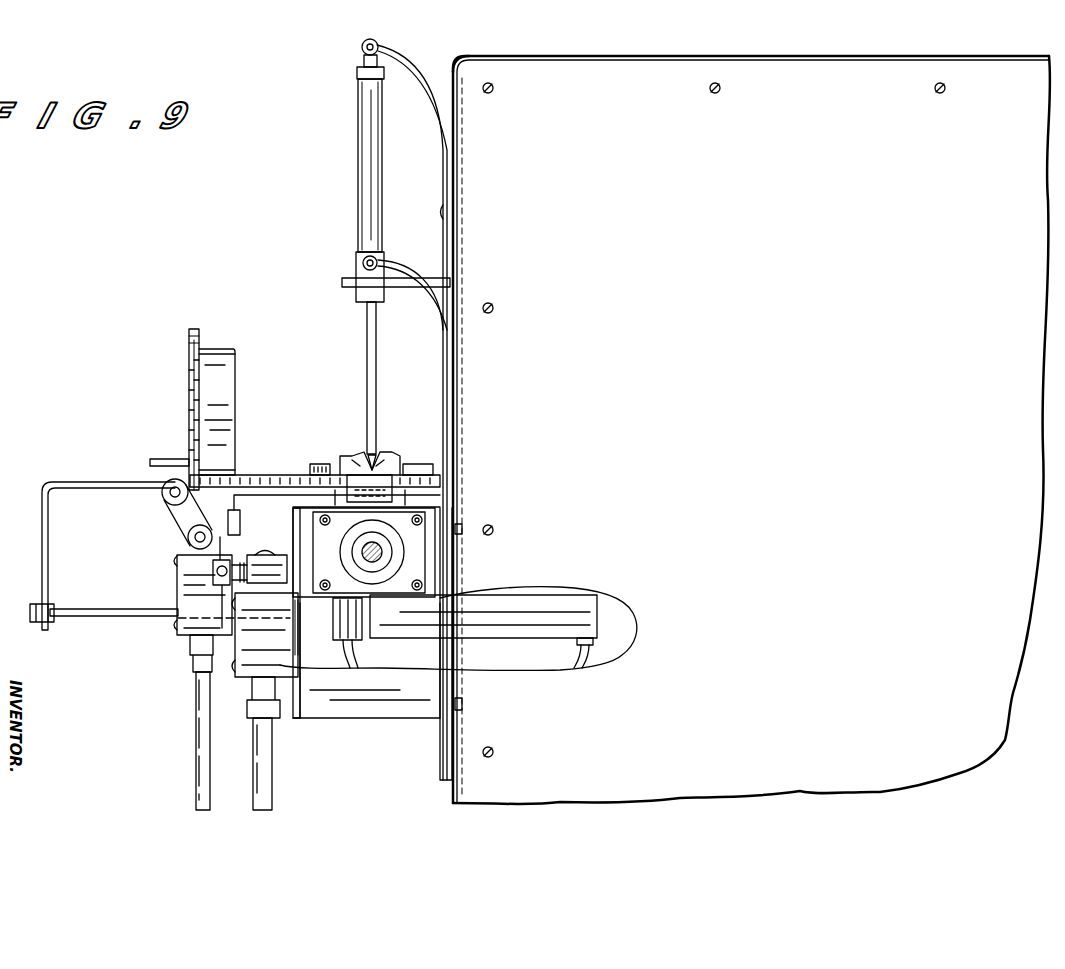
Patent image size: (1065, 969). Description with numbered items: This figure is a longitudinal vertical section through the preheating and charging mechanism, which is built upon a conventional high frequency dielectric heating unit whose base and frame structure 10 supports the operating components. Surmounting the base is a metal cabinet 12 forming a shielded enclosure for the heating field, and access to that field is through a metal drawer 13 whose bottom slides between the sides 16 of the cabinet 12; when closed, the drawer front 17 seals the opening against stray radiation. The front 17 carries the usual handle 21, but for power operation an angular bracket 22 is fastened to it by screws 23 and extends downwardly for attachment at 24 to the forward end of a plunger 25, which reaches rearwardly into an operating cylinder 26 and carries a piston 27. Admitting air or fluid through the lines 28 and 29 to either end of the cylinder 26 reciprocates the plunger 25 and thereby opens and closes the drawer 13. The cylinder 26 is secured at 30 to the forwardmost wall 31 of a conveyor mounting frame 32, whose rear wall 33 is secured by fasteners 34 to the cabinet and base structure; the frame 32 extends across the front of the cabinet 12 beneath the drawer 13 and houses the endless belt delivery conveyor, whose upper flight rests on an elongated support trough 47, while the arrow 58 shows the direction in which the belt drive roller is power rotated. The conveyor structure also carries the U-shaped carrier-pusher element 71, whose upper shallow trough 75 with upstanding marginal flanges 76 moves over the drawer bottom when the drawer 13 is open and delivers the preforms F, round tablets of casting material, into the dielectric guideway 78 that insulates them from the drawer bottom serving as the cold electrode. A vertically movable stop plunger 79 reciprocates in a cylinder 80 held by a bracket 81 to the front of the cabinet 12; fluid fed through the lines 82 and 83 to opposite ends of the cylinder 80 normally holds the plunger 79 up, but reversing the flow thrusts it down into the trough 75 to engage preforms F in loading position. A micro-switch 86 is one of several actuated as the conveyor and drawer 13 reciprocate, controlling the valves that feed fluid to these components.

The base and frame structure 10 is at (446, 800).
The cabinet 12 is at (497, 47).
The drawer 13 is at (186, 396).
The sides of the cabinet 16 is at (751, 415).
The front of the drawer 17 is at (189, 371).
The handle 21 is at (158, 466).
The angular bracket 22 is at (48, 482).
The screws 23 is at (152, 471).
The attachment 24 is at (30, 606).
The plunger 25 is at (92, 618).
The operating cylinder 26 is at (538, 596).
The piston 27 is at (364, 621).
The line 28 is at (352, 664).
The line 29 is at (592, 656).
The securing point of cylinder 30 is at (300, 626).
The forwardmost wall 31 is at (294, 720).
The conveyor mounting frame 32 is at (362, 720).
The rear wall 33 is at (440, 720).
The screw 34 is at (462, 527).
The support pan or trough 47 is at (293, 532).
The arrow 58 is at (395, 496).
The carrier-pusher element 71 is at (405, 447).
The upper shallow trough 75 is at (432, 474).
The upstanding marginal flanges 76 is at (342, 462).
The guideway 78 is at (316, 464).
The stop member or plunger 79 is at (366, 318).
The cylinder 80 is at (358, 157).
The bracket 81 is at (352, 282).
The line 82 is at (382, 262).
The line 83 is at (436, 110).
The micro-switch 86 is at (178, 550).
The preforms F is at (380, 458).